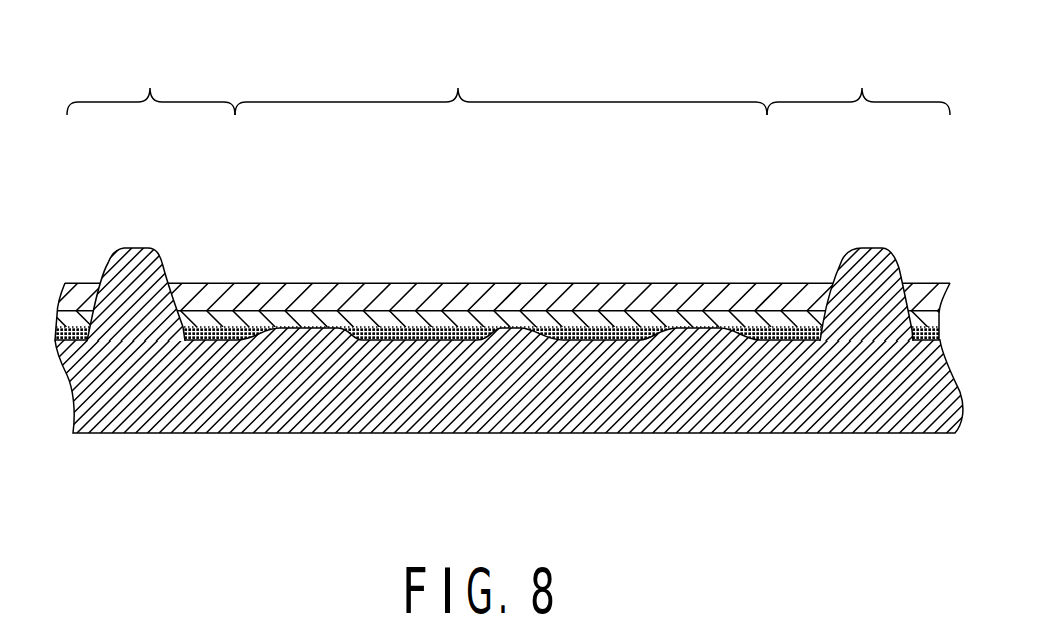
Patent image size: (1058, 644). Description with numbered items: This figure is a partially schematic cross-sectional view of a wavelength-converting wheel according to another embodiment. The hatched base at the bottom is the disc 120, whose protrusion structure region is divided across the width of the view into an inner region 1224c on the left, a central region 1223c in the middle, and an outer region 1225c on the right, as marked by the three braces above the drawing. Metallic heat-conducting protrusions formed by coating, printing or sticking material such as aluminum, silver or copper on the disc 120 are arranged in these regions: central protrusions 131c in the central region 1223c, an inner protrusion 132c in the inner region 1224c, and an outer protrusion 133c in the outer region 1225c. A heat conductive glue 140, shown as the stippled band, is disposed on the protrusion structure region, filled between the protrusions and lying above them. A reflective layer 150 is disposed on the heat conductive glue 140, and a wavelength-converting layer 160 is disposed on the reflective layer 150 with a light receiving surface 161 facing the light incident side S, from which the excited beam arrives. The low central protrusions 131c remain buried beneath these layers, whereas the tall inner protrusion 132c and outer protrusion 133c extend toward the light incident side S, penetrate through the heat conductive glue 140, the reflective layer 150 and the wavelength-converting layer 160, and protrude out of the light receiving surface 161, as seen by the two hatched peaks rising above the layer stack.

The disc 120 is at (193, 405).
The central protrusions 131c is at (497, 327).
The inner protrusions 132c is at (150, 263).
The outer protrusions 133c is at (853, 263).
The heat conductive glue 140 is at (799, 330).
The reflective layer 150 is at (718, 305).
The wavelength-converting layer 160 is at (637, 278).
The light receiving surface 161 is at (535, 283).
The central region 1223c is at (501, 81).
The inner region 1224c is at (151, 81).
The outer region 1225c is at (858, 81).
The light incident side S is at (347, 226).